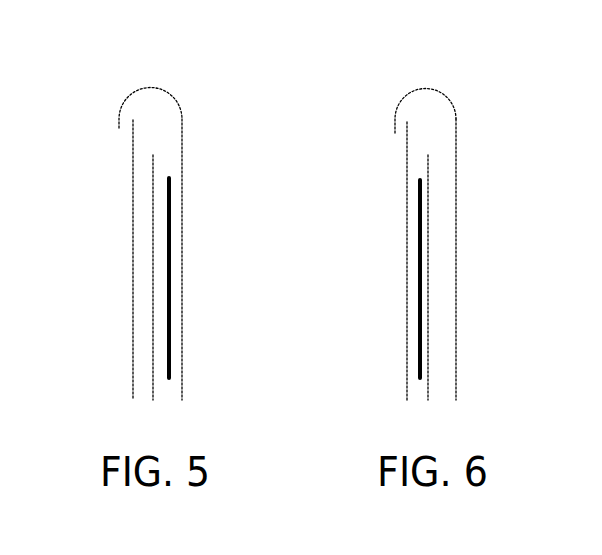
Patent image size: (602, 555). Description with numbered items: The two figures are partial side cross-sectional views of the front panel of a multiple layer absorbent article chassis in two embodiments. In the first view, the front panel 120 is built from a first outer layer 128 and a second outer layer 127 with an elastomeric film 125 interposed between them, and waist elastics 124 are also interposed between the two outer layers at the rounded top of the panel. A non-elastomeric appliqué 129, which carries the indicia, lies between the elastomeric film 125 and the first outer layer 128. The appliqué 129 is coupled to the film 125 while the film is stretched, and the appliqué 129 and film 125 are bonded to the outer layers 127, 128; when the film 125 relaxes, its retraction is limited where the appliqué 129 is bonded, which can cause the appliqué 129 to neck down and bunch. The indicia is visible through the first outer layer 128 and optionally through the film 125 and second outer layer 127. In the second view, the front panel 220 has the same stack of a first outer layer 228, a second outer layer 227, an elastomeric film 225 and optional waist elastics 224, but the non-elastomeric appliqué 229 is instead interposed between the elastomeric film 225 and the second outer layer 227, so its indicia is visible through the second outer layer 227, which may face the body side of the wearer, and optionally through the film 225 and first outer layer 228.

In FIG. 5, the front panel 120 is at (181, 205).
In FIG. 5, the waist elastics 124 is at (154, 123).
In FIG. 5, the elastomeric film 125 is at (153, 283).
In FIG. 5, the second outer layer 127 is at (131, 339).
In FIG. 5, the first outer layer 128 is at (182, 350).
In FIG. 5, the non-elastomeric appliqué 129 is at (170, 190).
In FIG. 6, the front panel 220 is at (446, 205).
In FIG. 6, the waist elastics 224 is at (429, 123).
In FIG. 6, the elastomeric film 225 is at (430, 283).
In FIG. 6, the second outer layer 227 is at (407, 340).
In FIG. 6, the first outer layer 228 is at (457, 368).
In FIG. 6, the non-elastomeric appliqué 229 is at (419, 195).